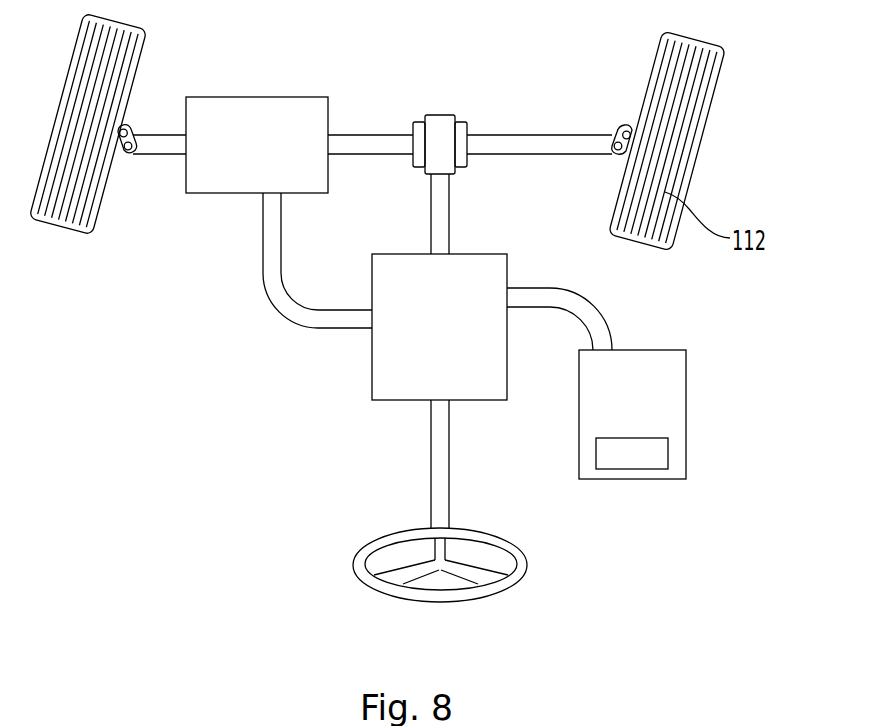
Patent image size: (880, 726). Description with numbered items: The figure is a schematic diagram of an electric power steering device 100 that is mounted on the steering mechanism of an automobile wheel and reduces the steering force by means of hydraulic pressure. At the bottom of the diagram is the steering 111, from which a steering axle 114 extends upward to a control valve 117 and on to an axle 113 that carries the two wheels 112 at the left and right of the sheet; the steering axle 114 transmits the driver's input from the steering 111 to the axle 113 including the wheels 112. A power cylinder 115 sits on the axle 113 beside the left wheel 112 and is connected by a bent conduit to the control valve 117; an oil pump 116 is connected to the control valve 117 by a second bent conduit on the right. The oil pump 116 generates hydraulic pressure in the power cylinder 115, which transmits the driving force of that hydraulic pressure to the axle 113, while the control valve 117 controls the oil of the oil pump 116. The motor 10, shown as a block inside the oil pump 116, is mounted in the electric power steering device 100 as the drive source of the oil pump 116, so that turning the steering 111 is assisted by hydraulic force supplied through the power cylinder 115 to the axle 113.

The electric power steering device 100 is at (367, 457).
The motor 10 is at (640, 457).
The steering 111 is at (428, 595).
The wheels 112 is at (68, 203).
The axle 113 is at (497, 143).
The steering axle 114 is at (440, 461).
The power cylinder 115 is at (255, 115).
The oil pump 116 is at (662, 400).
The control valve 117 is at (393, 361).